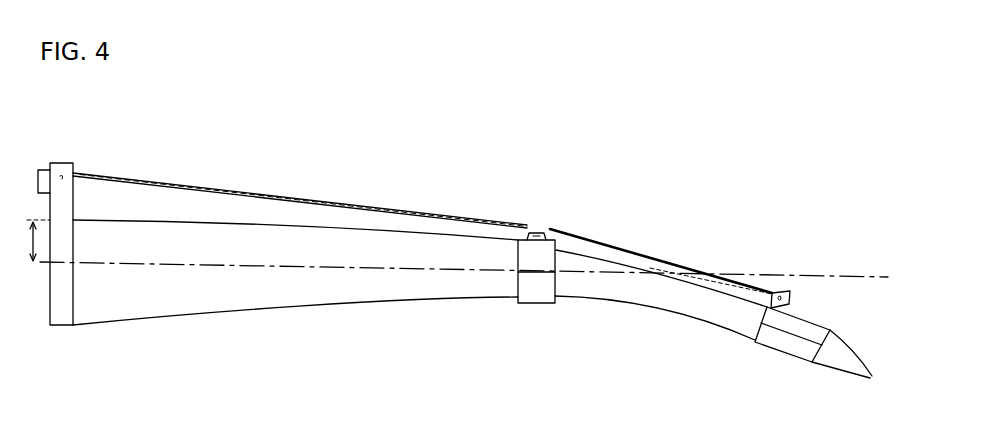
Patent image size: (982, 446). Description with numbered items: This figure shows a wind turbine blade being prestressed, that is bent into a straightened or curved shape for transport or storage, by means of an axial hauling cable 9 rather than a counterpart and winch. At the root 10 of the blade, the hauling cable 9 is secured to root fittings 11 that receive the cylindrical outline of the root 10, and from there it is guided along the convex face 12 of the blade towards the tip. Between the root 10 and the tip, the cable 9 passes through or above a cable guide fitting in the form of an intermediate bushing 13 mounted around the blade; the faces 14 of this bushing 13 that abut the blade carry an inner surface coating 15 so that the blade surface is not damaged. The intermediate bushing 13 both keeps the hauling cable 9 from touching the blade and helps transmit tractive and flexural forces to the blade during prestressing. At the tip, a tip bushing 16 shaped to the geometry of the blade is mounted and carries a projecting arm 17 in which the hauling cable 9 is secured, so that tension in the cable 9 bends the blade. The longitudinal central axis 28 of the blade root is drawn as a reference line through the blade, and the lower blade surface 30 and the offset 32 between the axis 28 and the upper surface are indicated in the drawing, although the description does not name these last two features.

The hauling cable 9 is at (587, 237).
The root 10 is at (102, 243).
The root fittings 11 is at (58, 322).
The convex face 12 is at (370, 227).
The intermediate bushing 13 is at (533, 227).
The faces 14 is at (513, 298).
The inner surface coating 15 is at (724, 372).
The tip bushing 16 is at (783, 347).
The projecting arm 17 is at (783, 287).
The longitudinal central axis 28 is at (176, 263).
The lower surface 30 is at (435, 299).
The offset distance 32 is at (25, 240).